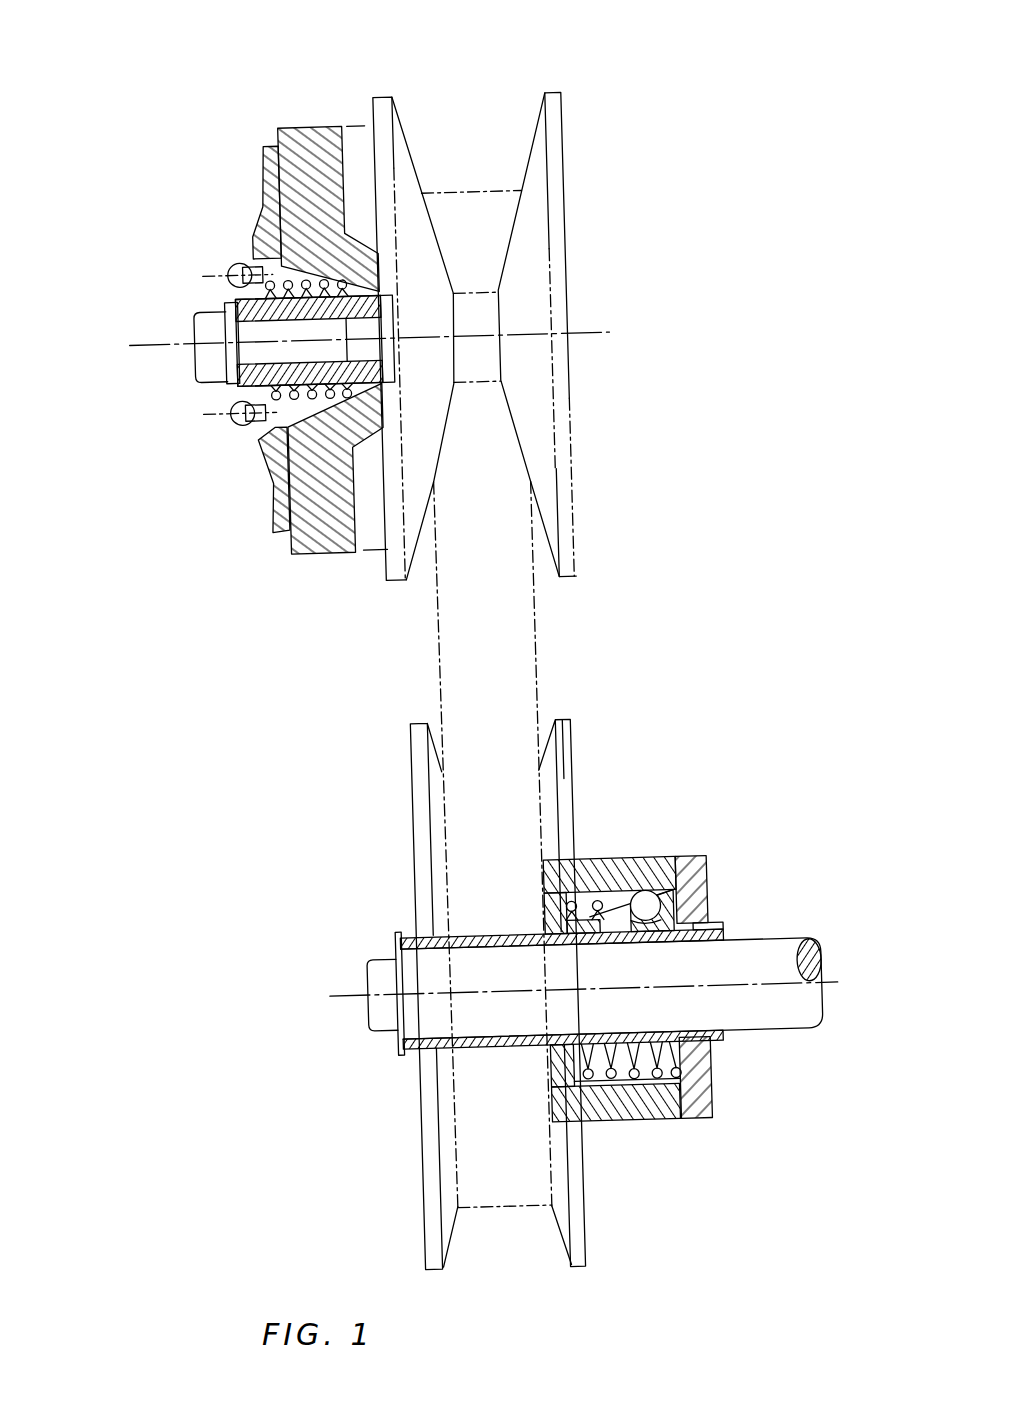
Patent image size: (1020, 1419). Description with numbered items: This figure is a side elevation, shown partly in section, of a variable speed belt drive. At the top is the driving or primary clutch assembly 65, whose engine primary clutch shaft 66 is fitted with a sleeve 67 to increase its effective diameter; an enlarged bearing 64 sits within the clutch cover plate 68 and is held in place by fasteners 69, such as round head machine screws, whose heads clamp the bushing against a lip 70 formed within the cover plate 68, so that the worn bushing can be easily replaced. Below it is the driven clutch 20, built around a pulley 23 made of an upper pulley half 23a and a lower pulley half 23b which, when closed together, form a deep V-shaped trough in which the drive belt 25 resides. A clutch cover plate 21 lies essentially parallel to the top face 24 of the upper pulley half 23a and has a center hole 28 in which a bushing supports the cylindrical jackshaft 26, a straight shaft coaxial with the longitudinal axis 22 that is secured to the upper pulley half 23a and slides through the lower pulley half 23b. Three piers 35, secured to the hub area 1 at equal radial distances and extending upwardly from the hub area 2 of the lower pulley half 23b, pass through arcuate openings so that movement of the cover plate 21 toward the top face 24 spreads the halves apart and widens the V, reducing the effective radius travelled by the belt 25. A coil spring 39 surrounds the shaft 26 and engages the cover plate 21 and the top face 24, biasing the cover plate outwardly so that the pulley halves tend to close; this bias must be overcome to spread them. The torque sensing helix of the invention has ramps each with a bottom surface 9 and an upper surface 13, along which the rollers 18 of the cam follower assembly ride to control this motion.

The driving or primary clutch assembly 65 is at (347, 97).
The clutch cover plate 68 is at (262, 210).
The fasteners 69 is at (230, 267).
The sleeve 67 is at (224, 306).
The engine primary clutch shaft 66 is at (198, 357).
The enlarged bearing 64 is at (258, 393).
The lip 70 is at (273, 420).
The drive belt 25 is at (508, 668).
The driven clutch 20 is at (585, 737).
The top face 24 is at (572, 797).
The piers 35 is at (647, 857).
The bottom surface 9 is at (607, 915).
The clutch cover plate 21 is at (703, 855).
The hub area 1 is at (556, 910).
The rollers 18 is at (640, 895).
The center hole 28 is at (690, 940).
The upper surface 13 is at (641, 924).
The longitudinal axis 22 is at (510, 990).
The coil spring 39 is at (693, 1043).
The cylindrical jackshaft 26 is at (780, 1002).
The hub area 2 is at (455, 1133).
The upper pulley half 23a is at (580, 1205).
The lower pulley half 23b is at (430, 1255).
The pulley 23 is at (505, 1240).